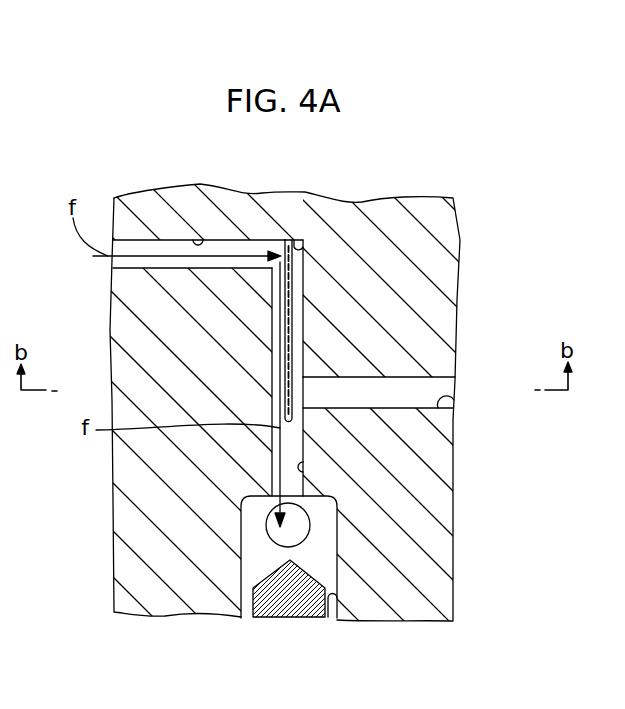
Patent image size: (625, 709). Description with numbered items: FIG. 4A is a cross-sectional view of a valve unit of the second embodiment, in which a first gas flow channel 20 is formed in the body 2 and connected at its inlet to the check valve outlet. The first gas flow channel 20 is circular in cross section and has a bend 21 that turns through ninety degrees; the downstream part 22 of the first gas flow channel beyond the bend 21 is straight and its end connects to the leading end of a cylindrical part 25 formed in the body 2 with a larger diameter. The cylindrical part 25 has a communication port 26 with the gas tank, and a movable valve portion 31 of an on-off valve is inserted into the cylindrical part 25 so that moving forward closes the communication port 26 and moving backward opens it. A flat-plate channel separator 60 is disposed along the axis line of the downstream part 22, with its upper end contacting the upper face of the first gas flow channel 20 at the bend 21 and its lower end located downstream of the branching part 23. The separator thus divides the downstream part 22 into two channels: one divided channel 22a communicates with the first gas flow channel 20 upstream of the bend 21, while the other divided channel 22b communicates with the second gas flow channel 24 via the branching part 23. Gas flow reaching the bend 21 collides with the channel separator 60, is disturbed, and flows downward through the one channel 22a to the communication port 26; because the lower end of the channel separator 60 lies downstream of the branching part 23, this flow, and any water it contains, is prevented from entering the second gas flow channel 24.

The body 2 is at (440, 262).
The first gas flow channel 20 is at (198, 236).
The bend 21 is at (297, 238).
The downstream part of the first gas flow channel 22 is at (305, 471).
The one of the divided channels 22a is at (280, 323).
The other of the divided channels 22b is at (297, 300).
The branching part 23 is at (305, 393).
The second gas flow channel 24 is at (453, 399).
The cylindrical part 25 is at (329, 617).
The communication port 26 is at (268, 543).
The movable valve portion 31 is at (275, 614).
The channel separator 60 is at (290, 327).